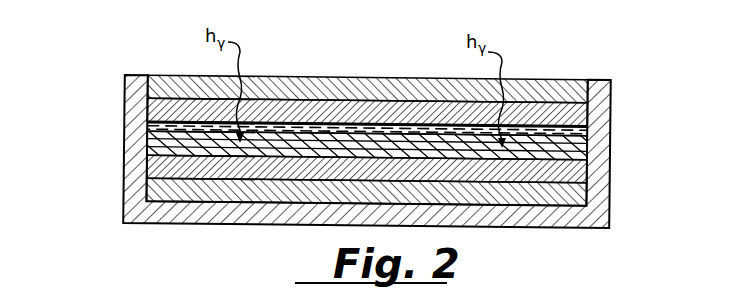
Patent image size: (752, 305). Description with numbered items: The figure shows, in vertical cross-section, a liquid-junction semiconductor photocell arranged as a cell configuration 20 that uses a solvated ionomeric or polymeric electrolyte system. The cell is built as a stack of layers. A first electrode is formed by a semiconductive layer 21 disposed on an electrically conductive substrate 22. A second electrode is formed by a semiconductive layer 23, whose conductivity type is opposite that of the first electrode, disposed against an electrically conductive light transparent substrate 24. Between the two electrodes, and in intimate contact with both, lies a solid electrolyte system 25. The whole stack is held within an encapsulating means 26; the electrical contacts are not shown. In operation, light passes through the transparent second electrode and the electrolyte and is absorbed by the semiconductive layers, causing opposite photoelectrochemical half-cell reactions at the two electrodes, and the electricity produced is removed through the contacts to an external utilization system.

The cell configuration 20 is at (111, 128).
The semiconductive layer 21 is at (580, 172).
The electrically conductive substrate 22 is at (582, 195).
The semiconductive layer 23 is at (575, 113).
The electrically conductive light transparent substrate 24 is at (545, 92).
The solid electrolyte system 25 is at (578, 145).
The encapsulating means 26 is at (580, 220).